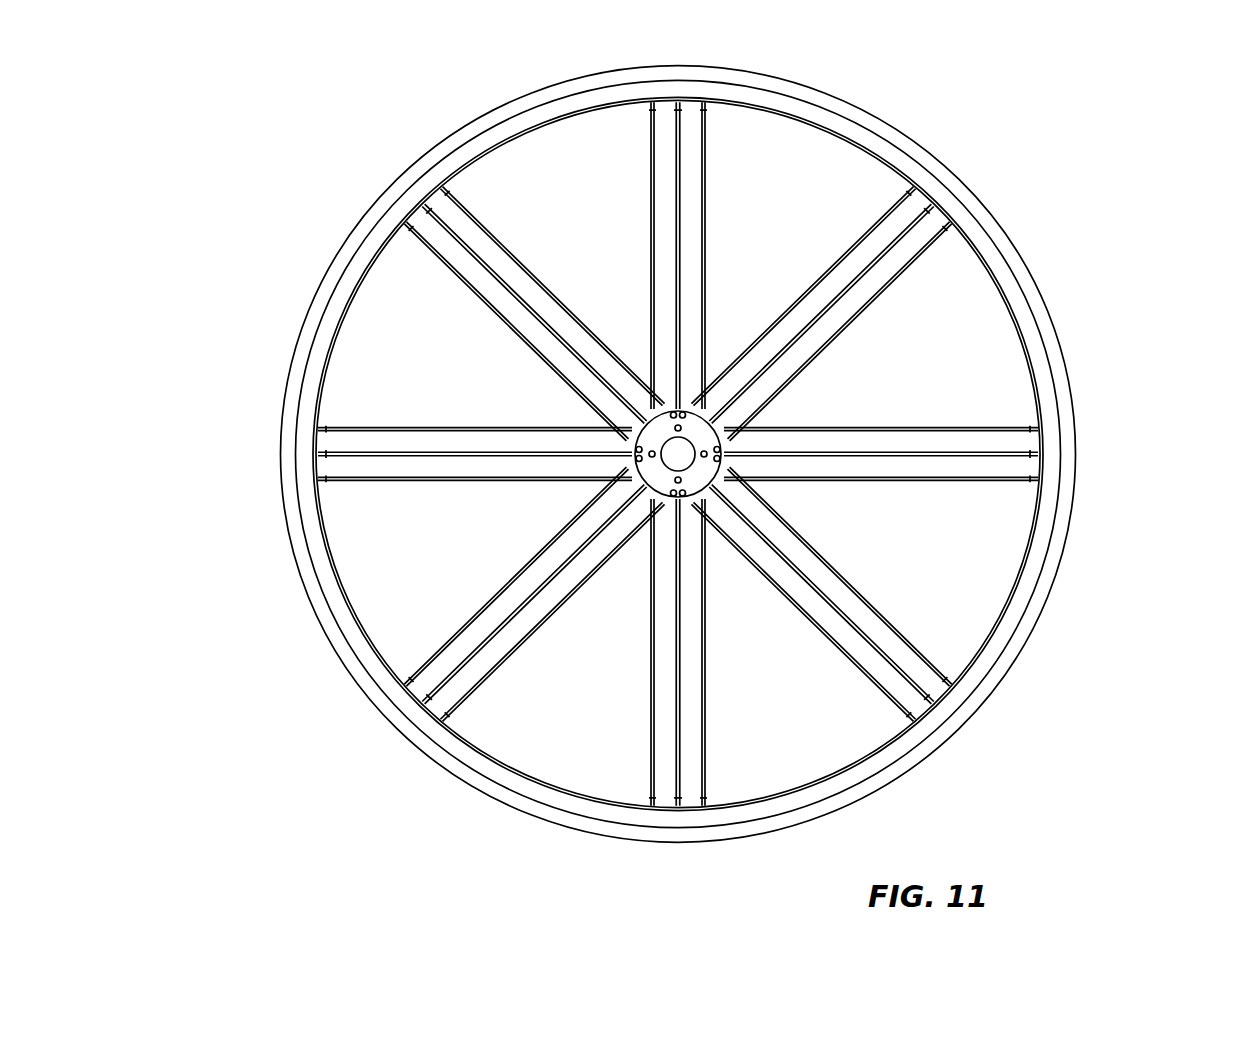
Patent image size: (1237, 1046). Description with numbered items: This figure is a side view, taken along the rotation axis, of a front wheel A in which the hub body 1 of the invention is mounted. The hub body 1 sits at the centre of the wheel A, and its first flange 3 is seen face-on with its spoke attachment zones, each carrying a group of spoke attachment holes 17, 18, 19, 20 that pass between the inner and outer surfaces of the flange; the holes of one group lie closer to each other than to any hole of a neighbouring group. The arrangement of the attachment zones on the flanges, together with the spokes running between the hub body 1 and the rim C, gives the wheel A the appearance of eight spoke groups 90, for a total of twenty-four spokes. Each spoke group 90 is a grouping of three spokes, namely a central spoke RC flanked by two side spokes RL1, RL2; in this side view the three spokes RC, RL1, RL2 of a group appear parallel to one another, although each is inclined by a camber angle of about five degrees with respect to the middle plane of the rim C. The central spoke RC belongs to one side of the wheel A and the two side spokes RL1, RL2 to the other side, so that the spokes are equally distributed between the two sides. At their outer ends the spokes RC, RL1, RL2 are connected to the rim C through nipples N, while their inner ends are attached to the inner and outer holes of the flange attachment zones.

The front wheel A is at (1104, 194).
The rim C is at (1060, 361).
The spoke group 90 is at (657, 449).
The nipple N is at (678, 255).
The side spoke RL1 is at (703, 255).
The side spoke RL2 is at (652, 255).
The central spoke RC is at (678, 255).
The hub body 1 is at (629, 417).
The first flange 3 is at (725, 463).
The spoke attachment holes 17 is at (680, 406).
The spoke attachment holes 18 is at (724, 446).
The spoke attachment holes 19 is at (673, 508).
The spoke attachment holes 20 is at (621, 458).